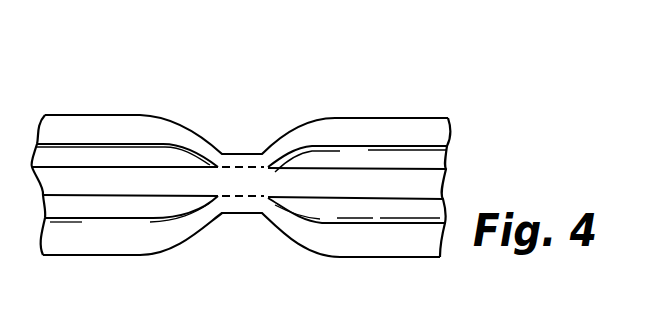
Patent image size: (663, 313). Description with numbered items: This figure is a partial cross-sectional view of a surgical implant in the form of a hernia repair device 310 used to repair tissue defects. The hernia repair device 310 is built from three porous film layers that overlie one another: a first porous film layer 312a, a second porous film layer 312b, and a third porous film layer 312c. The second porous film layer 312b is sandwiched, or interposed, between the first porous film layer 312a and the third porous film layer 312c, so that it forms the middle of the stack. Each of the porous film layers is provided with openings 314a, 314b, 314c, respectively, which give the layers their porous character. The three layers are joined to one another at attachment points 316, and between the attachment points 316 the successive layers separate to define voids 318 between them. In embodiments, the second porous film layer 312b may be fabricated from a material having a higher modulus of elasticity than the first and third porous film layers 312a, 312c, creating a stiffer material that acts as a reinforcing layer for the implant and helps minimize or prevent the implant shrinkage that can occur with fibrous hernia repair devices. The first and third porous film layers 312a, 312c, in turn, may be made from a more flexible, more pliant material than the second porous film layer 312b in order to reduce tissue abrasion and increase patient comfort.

The hernia repair device 310 is at (100, 82).
The first porous film layer 312a is at (365, 125).
The second porous film layer 312b is at (400, 183).
The third porous film layer 312c is at (377, 243).
The openings 314a is at (294, 131).
The openings 314b is at (94, 171).
The openings 314c is at (312, 245).
The attachment points 316 is at (242, 152).
The voids 318 is at (130, 161).